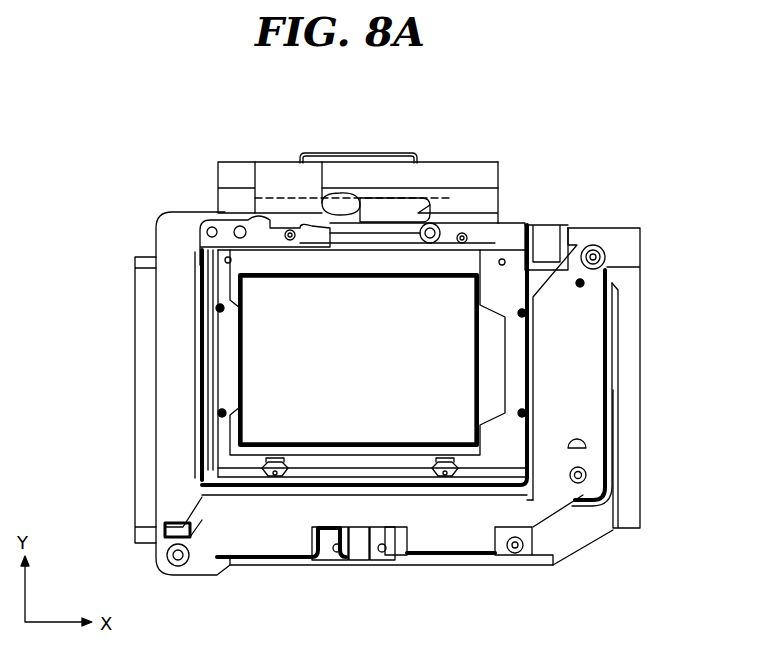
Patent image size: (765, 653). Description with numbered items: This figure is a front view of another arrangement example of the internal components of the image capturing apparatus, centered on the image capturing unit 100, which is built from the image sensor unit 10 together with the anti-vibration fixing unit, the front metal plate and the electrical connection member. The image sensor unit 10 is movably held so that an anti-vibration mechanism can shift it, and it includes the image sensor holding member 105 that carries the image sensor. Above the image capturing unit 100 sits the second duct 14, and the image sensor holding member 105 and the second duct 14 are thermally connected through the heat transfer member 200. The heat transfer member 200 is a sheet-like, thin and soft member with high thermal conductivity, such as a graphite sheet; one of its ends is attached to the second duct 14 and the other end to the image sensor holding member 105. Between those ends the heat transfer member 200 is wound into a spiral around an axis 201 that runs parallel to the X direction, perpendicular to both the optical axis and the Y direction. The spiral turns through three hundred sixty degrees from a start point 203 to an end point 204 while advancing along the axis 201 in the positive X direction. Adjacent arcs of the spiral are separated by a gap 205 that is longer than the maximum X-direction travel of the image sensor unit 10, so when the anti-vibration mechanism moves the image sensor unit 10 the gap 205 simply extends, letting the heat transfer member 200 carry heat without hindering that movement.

The image sensor unit 10 is at (273, 328).
The second duct 14 is at (427, 178).
The image capturing unit 100 is at (590, 227).
The image sensor holding member 105 is at (252, 196).
The heat transfer member 200 is at (300, 182).
The axis 201 is at (447, 205).
The start point 203 is at (220, 170).
The end point 204 is at (390, 200).
The gap 205 is at (340, 205).